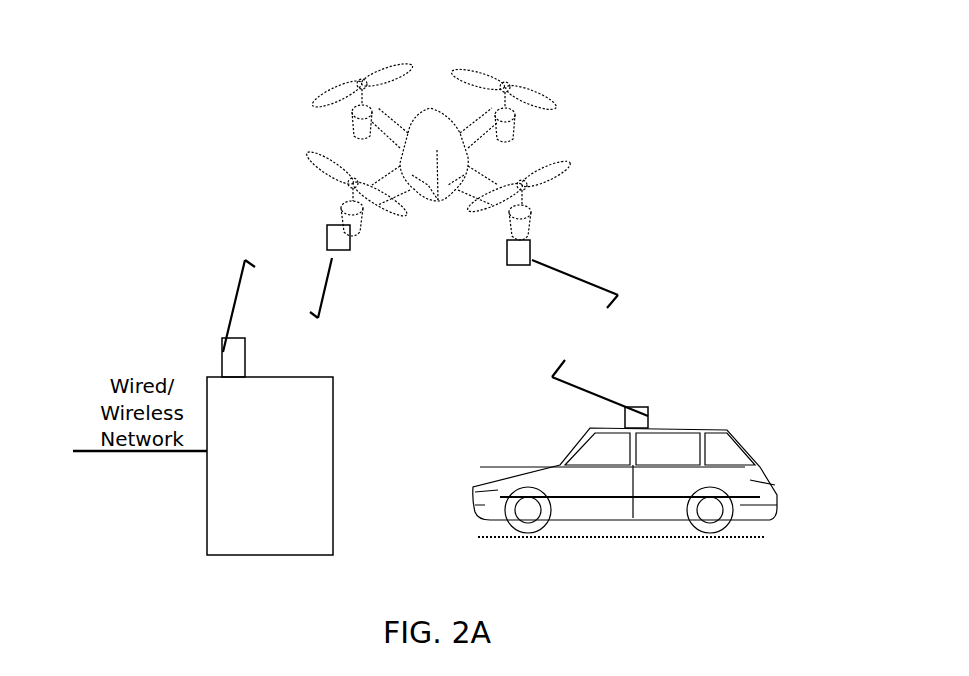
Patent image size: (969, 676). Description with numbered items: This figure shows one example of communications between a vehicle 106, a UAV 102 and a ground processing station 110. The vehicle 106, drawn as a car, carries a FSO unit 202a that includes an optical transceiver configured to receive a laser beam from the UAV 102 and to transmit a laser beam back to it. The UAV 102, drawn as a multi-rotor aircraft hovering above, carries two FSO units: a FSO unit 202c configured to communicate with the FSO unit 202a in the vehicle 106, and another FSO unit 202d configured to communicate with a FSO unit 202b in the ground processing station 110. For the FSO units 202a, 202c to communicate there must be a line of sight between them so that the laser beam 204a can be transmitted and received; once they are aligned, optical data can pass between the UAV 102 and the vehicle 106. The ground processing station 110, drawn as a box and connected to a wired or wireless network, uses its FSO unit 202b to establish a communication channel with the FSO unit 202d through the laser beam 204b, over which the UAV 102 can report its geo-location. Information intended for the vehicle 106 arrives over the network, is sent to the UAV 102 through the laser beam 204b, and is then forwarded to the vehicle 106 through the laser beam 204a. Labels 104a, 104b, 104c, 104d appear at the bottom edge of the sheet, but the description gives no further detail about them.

The UAV 102 is at (537, 93).
The vehicle 106 is at (757, 457).
The ground processing station 110 is at (330, 377).
The FSO unit 202a is at (647, 407).
The FSO unit 202b is at (250, 377).
The FSO unit 202c is at (520, 257).
The FSO unit 202d is at (343, 222).
The laser beam 204a is at (590, 338).
The laser beam 204b is at (277, 304).
The component 104a is at (159, 667).
The component 104b is at (306, 671).
The component 104c is at (488, 671).
The component 104d is at (621, 671).